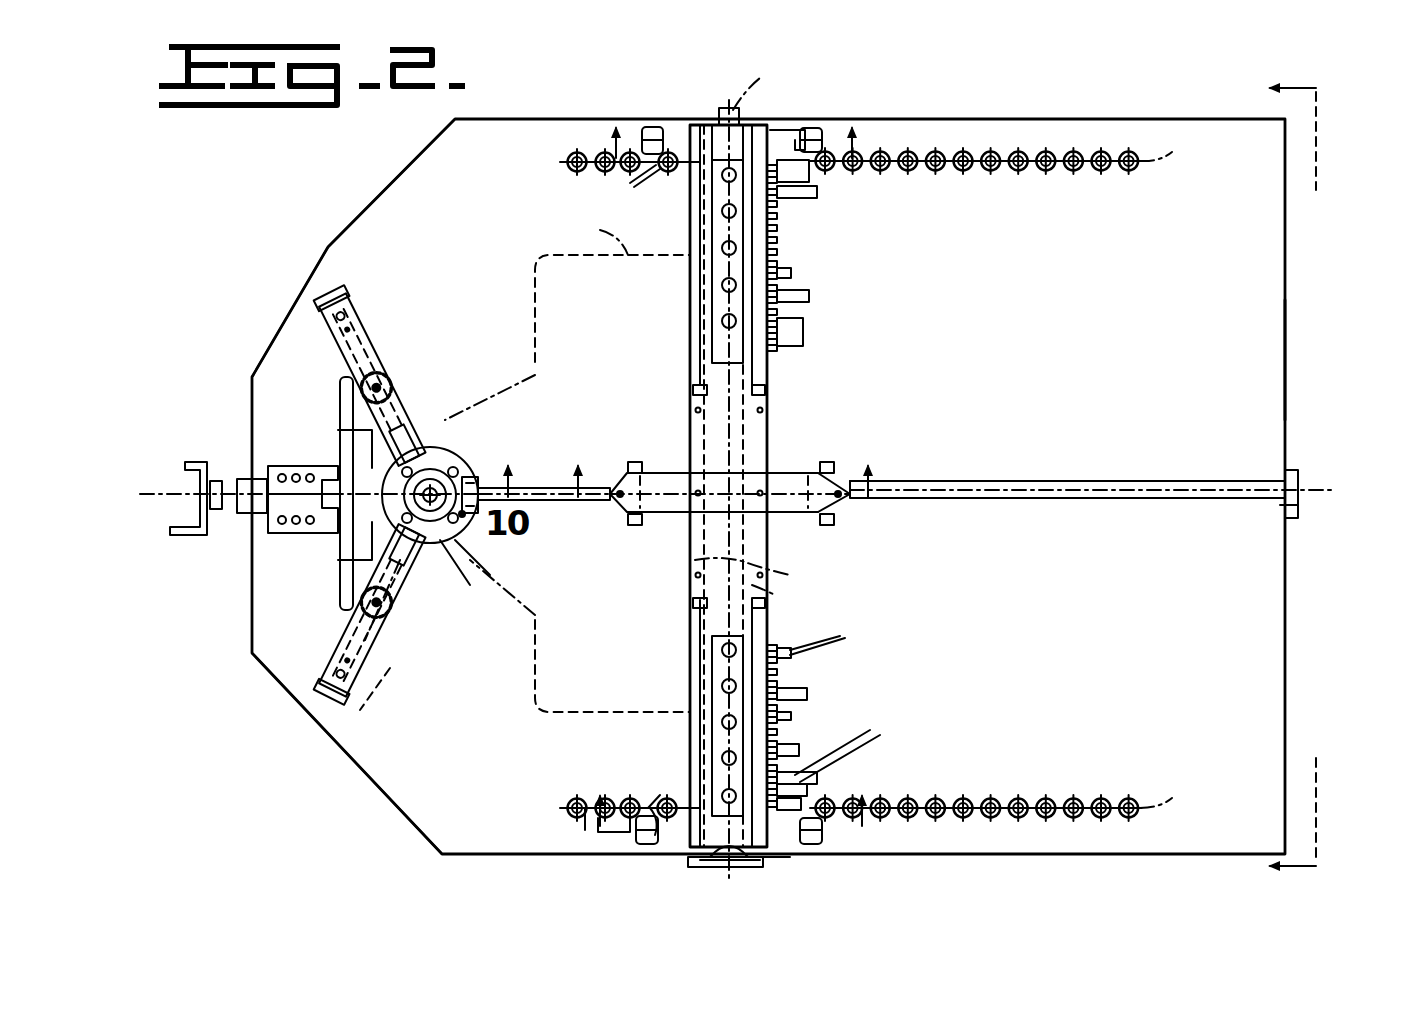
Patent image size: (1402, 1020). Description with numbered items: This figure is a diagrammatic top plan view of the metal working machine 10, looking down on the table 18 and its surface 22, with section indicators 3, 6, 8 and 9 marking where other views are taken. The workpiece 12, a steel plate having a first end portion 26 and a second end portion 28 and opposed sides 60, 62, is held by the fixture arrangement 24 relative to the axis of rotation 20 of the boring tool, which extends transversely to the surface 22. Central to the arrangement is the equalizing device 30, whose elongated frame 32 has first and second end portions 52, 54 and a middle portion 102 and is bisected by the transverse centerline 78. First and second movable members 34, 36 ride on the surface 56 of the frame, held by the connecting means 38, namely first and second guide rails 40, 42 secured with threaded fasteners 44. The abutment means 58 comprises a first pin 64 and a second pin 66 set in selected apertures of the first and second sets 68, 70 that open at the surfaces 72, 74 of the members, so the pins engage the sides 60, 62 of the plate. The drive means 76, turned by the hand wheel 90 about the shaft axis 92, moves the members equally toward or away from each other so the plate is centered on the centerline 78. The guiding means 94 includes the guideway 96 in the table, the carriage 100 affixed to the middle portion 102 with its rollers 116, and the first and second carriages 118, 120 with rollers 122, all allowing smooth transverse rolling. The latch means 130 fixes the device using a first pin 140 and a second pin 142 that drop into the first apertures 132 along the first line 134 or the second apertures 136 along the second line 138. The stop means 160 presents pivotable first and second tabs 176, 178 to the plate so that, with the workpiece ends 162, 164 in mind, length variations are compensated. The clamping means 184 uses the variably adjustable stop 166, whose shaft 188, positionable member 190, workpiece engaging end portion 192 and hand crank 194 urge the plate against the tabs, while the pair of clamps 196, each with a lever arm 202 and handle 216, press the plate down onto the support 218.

The metal working machine 10 is at (268, 212).
The workpiece 12 is at (535, 280).
The table 18 is at (1288, 352).
The axis of rotation 20 is at (490, 465).
The surface 22 is at (1262, 318).
The fixture arrangement 24 is at (356, 822).
The first end portion 26 is at (462, 620).
The second end portion 28 is at (790, 578).
The equalizing device 30 is at (785, 585).
The elongated frame 32 is at (770, 432).
The first movable member 34 is at (722, 735).
The second movable member 36 is at (720, 320).
The connecting means 38 is at (688, 348).
The first guide rail 40 is at (698, 230).
The second guide rail 42 is at (780, 258).
The threaded fasteners 44 is at (697, 392).
The first end portion 52 is at (688, 862).
The second end portion 54 is at (742, 140).
The surface 56 is at (695, 434).
The abutment means 58 is at (660, 300).
The first side 60 is at (570, 736).
The second side 62 is at (581, 230).
The first pin 64 is at (785, 722).
The second pin 66 is at (780, 272).
The first set of apertures 68 is at (833, 702).
The second set of apertures 70 is at (770, 205).
The surface 72 is at (782, 748).
The surface 74 is at (770, 380).
The drive means 76 is at (742, 866).
The transverse centerline 78 is at (1310, 485).
The hand wheel 90 is at (780, 868).
The axis 92 is at (767, 74).
The guiding means 94 is at (888, 478).
The guideway 96 is at (1150, 495).
The carriage 100 is at (838, 460).
The middle portion 102 is at (775, 520).
The rollers 116 is at (635, 460).
The first carriage 118 is at (812, 790).
The second carriage 120 is at (790, 138).
The rollers 122 is at (652, 128).
The latch means 130 is at (592, 180).
The first plurality of spaced apertures 132 is at (1002, 788).
The first line 134 is at (1172, 798).
The second plurality of spaced apertures 136 is at (1032, 178).
The second line 138 is at (1175, 152).
The first pin 140 is at (668, 790).
The second pin 142 is at (700, 200).
The stop means 160 is at (835, 280).
The first end 162 is at (697, 560).
The first end 164 is at (340, 555).
The variably adjustable stop 166 is at (292, 432).
The first tabs 176 is at (700, 710).
The second tabs 178 is at (740, 278).
The clamping means 184 is at (212, 448).
The shaft 188 is at (240, 515).
The positionable member 190 is at (285, 520).
The workpiece engaging end portion 192 is at (440, 455).
The hand crank 194 is at (168, 528).
The clamps 196 is at (312, 325).
The lever arm 202 is at (355, 318).
The handle 216 is at (396, 378).
The support 218 is at (485, 548).
The section 3 is at (1307, 483).
The section 6 is at (731, 836).
The section 8 is at (723, 504).
The section 9 is at (734, 168).